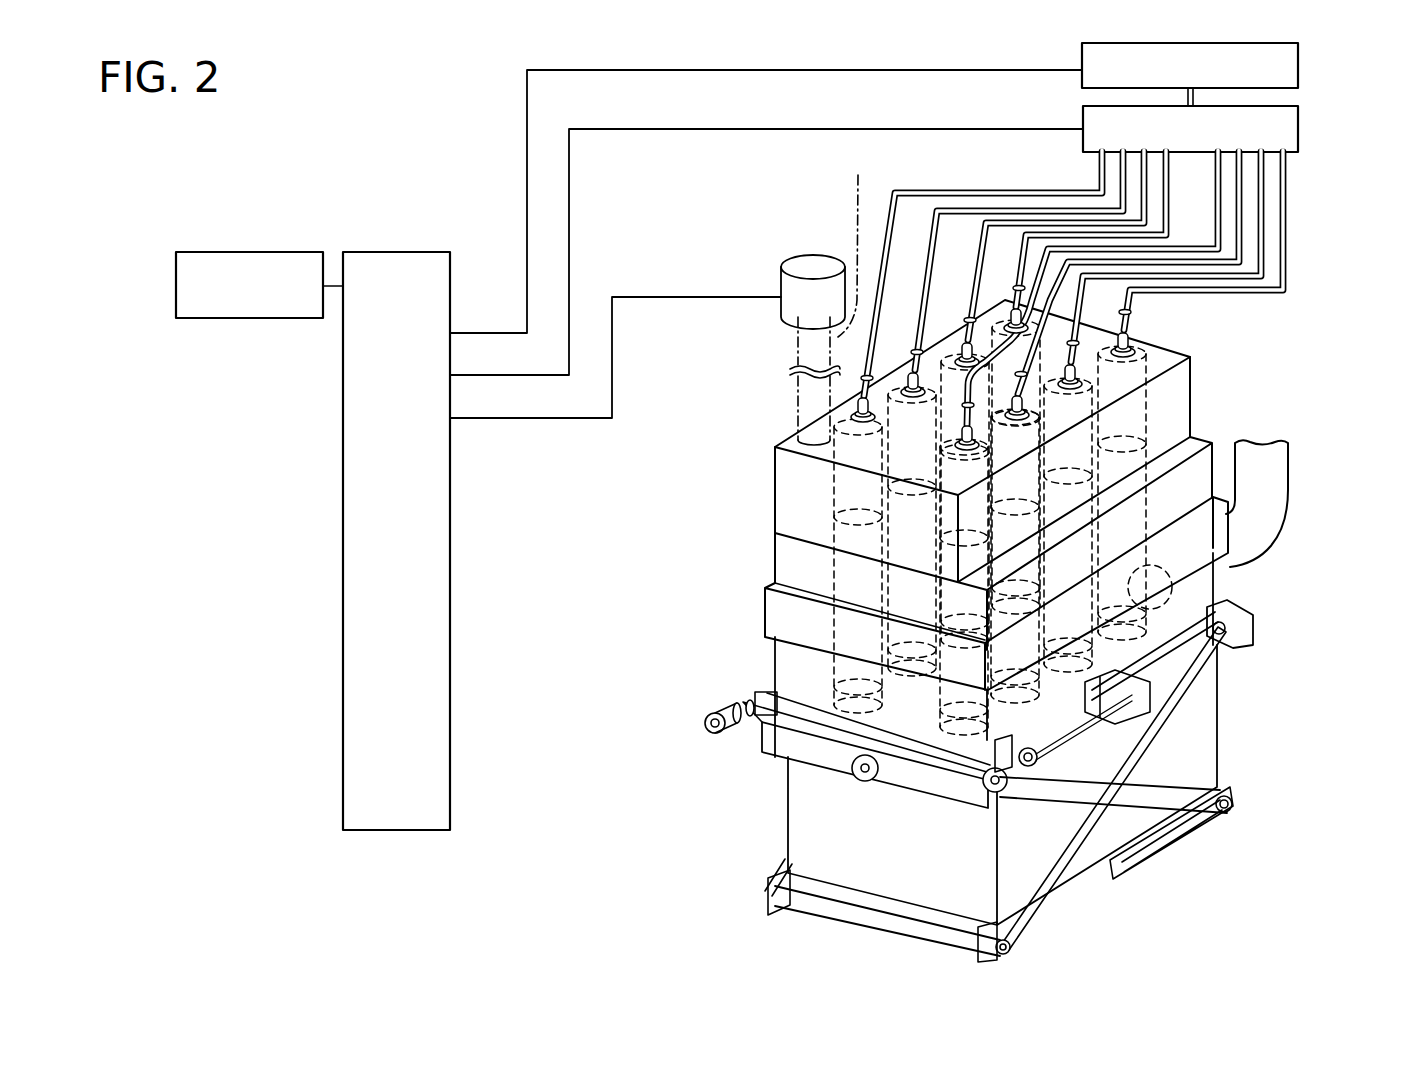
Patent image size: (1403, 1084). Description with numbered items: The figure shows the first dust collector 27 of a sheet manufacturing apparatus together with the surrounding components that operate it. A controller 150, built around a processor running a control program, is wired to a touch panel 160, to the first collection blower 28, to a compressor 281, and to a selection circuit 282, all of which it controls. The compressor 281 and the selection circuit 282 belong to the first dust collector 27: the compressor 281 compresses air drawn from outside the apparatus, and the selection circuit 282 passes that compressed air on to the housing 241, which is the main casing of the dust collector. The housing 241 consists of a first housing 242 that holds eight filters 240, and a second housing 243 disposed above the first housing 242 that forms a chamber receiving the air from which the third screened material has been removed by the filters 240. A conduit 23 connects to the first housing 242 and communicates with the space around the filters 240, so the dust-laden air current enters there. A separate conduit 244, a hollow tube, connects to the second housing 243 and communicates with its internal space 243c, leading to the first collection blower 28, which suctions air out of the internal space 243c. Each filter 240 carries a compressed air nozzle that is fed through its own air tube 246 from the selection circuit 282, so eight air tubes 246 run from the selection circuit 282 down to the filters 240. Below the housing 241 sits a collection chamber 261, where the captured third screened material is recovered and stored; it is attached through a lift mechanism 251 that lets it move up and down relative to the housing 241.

The first dust collector 27 is at (916, 66).
The first collection blower 28 is at (812, 253).
The conduit 23 is at (1290, 478).
The controller 150 is at (382, 252).
The touch panel 160 is at (252, 252).
The filter 240 is at (887, 472).
The housing 241 is at (912, 495).
The first housing 242 is at (773, 585).
The second housing 243 is at (940, 475).
The internal space 243c is at (808, 470).
The conduit 244 is at (863, 240).
The air tube 246 is at (1044, 211).
The lift mechanism 251 is at (1260, 632).
The collection chamber 261 is at (784, 820).
The compressor 281 is at (1298, 48).
The selection circuit 282 is at (1298, 120).